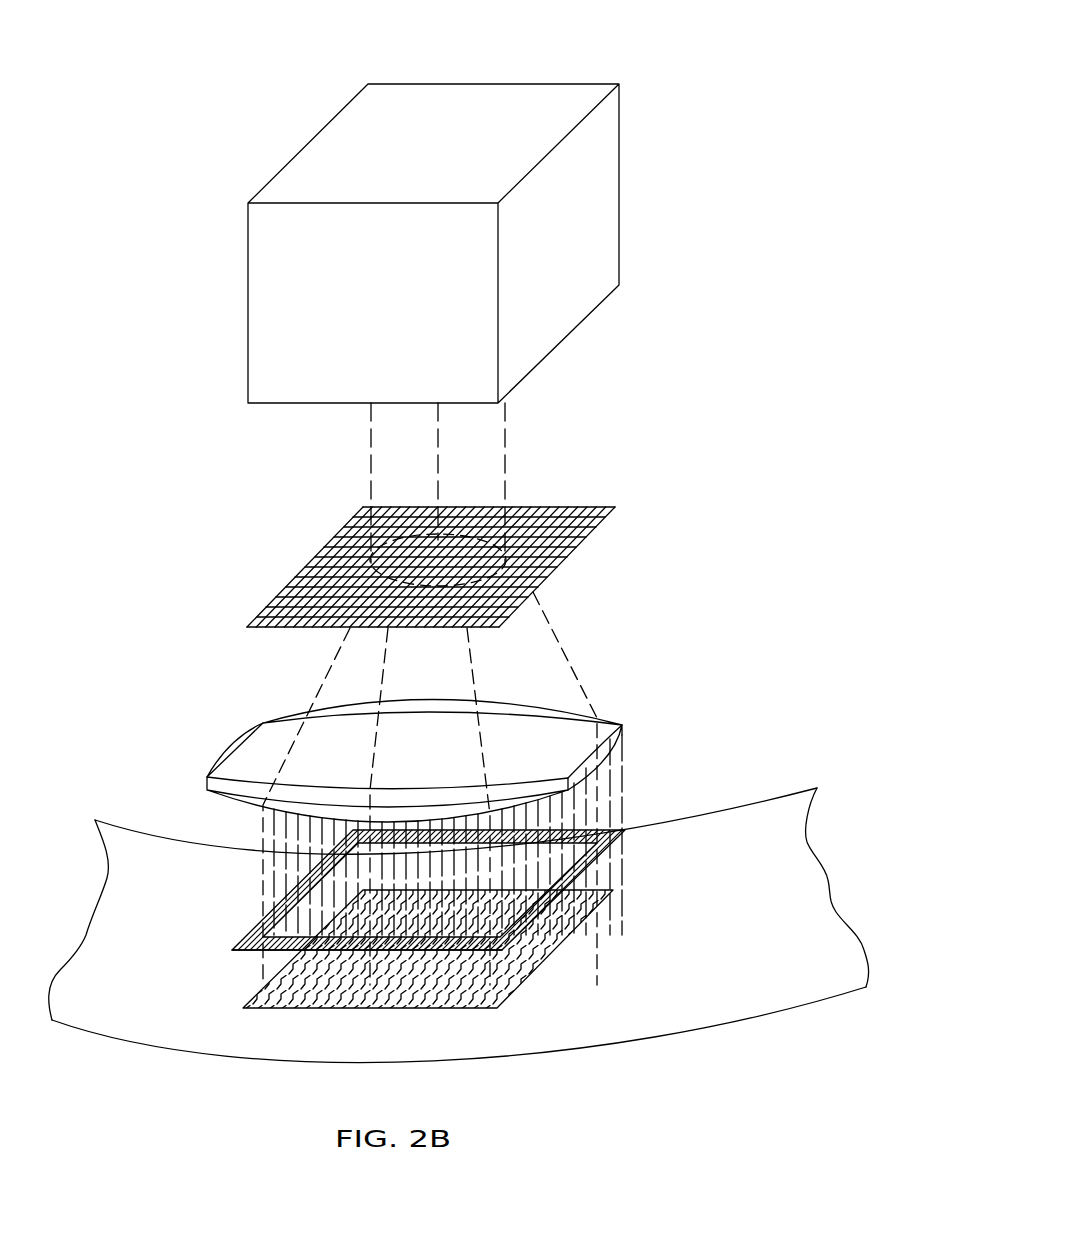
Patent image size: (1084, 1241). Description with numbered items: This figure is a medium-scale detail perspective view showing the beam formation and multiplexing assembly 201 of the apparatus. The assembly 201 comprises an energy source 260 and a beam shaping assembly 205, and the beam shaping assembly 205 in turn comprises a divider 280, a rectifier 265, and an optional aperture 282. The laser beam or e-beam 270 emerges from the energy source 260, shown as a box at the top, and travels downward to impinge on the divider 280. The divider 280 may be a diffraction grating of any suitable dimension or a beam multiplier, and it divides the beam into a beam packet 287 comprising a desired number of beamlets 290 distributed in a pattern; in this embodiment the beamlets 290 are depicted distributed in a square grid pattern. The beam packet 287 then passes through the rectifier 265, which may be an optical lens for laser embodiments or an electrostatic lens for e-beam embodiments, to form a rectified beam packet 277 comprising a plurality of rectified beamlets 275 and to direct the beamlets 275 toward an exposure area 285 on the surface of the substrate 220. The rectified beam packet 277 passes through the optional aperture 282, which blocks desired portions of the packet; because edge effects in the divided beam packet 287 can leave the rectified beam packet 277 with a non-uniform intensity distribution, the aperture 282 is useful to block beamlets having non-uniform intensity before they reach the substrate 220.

The beam formation and multiplexing assembly 201 is at (660, 69).
The beam shaping assembly 205 is at (305, 547).
The energy source 260 is at (619, 181).
The laser beam or e-beam 270 is at (507, 452).
The divider 280 is at (587, 543).
The beamlets 290 is at (557, 637).
The beam packet 287 is at (325, 677).
The rectifier 265 is at (625, 727).
The rectified beamlets 275 is at (612, 818).
The rectified beam packet 277 is at (262, 877).
The exposure area 285 is at (573, 927).
The aperture 282 is at (248, 953).
The substrate 220 is at (718, 1023).